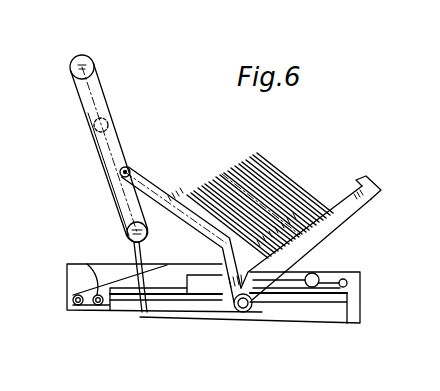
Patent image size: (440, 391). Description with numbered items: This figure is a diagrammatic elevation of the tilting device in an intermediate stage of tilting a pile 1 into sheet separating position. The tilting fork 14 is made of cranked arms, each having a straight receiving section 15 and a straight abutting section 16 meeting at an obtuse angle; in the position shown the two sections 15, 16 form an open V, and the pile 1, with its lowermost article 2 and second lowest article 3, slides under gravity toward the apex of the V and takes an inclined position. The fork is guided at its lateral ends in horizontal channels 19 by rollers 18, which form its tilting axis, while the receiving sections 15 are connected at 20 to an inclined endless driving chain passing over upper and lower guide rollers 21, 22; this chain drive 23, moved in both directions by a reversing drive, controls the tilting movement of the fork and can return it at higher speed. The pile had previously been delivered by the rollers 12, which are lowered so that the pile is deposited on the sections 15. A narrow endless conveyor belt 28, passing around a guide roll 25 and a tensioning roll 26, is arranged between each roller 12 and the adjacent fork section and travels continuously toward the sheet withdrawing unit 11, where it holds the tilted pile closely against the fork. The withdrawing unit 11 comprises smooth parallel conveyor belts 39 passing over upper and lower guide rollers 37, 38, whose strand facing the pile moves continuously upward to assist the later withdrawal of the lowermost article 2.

The pile 1 is at (282, 172).
The lowermost article 2 is at (180, 200).
The second lowest article 3 is at (180, 190).
The sheet withdrawing unit 11 is at (70, 101).
The rollers 12 is at (288, 280).
The tilting fork 14 is at (378, 200).
The receiving section 15 is at (158, 208).
The abutting section 16 is at (343, 212).
The rollers 18 is at (241, 313).
The horizontal channels 19 is at (310, 317).
The connection point 20 is at (127, 171).
The upper guide roller 21 is at (95, 125).
The lower guide roller 22 is at (143, 313).
The chain drive 23 is at (113, 137).
The guide roll 25 is at (78, 306).
The tensioning roll 26 is at (98, 306).
The conveyor belt 28 is at (87, 264).
The upper guide roller 37 is at (87, 65).
The lower guide roller 38 is at (147, 239).
The conveyor belts 39 is at (100, 86).